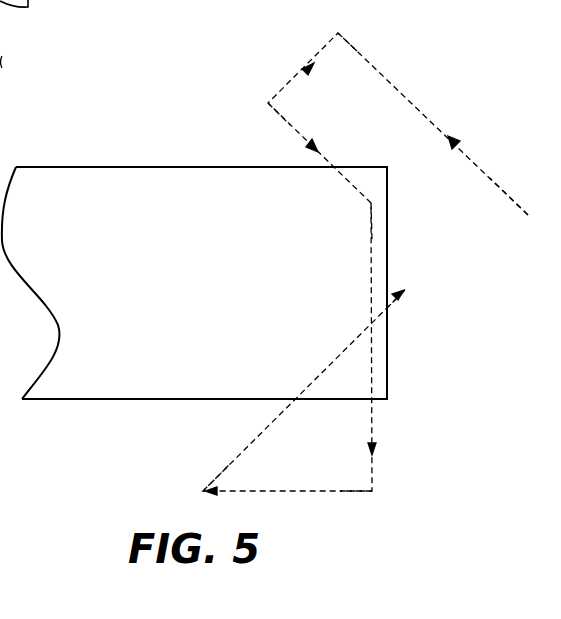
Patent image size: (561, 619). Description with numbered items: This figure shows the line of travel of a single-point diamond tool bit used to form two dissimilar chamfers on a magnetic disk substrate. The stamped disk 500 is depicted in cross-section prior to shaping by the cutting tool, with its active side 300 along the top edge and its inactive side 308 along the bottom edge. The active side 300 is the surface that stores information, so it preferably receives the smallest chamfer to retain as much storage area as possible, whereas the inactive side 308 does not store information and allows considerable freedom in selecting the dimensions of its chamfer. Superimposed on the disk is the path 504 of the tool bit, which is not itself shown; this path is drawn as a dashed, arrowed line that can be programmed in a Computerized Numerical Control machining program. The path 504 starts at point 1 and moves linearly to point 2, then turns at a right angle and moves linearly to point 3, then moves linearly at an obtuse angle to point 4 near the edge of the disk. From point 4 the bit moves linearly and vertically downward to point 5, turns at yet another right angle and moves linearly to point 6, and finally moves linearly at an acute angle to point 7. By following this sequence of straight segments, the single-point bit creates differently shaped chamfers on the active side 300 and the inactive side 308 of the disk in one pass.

The active side 300 is at (124, 167).
The inactive side 308 is at (166, 401).
The stamped disk 500 is at (84, 420).
The path of the tool bit 504 is at (418, 108).
The point 1 is at (517, 208).
The point 2 is at (346, 30).
The point 3 is at (268, 109).
The point 4 is at (358, 221).
The point 5 is at (370, 500).
The point 6 is at (208, 486).
The point 7 is at (408, 292).